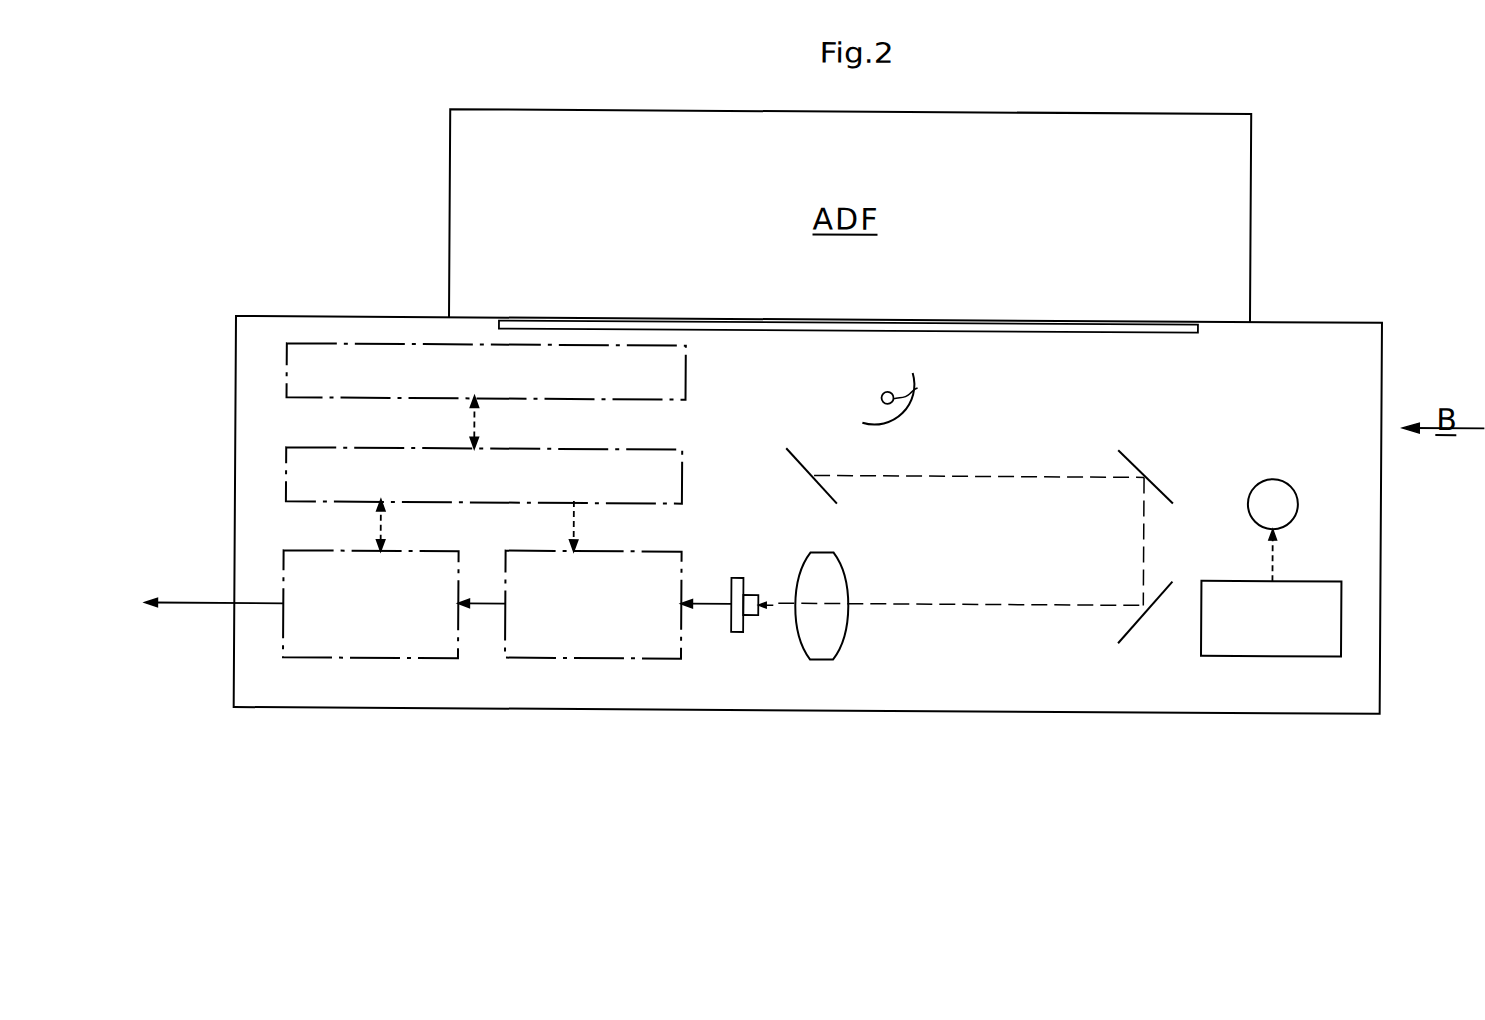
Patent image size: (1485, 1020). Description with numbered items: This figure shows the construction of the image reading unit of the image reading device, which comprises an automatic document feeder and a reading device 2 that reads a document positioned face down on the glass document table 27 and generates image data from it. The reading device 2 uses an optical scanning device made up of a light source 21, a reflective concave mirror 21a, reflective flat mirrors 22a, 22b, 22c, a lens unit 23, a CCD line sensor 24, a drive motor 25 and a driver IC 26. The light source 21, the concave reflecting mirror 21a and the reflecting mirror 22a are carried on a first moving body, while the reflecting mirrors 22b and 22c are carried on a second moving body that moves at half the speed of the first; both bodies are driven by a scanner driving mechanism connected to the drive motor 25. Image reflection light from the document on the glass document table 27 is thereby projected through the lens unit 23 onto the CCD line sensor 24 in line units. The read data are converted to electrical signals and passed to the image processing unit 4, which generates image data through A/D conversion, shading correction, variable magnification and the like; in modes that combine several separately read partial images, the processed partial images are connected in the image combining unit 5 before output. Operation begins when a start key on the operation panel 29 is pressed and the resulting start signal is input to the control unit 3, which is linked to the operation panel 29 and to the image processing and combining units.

The reading device 2 is at (1226, 417).
The control unit 3 is at (288, 475).
The image processing unit 4 is at (607, 655).
The image combining unit 5 is at (397, 657).
The light source 21 is at (917, 384).
The concave reflecting mirror 21a is at (920, 406).
The reflecting mirror 22a is at (797, 458).
The reflecting mirror 22b is at (1138, 437).
The reflecting mirror 22c is at (1136, 613).
The lens unit 23 is at (848, 623).
The CCD line sensor 24 is at (753, 612).
The drive motor 25 is at (1297, 488).
The driver IC 26 is at (1272, 650).
The glass document table 27 is at (1025, 323).
The operation panel 29 is at (288, 365).